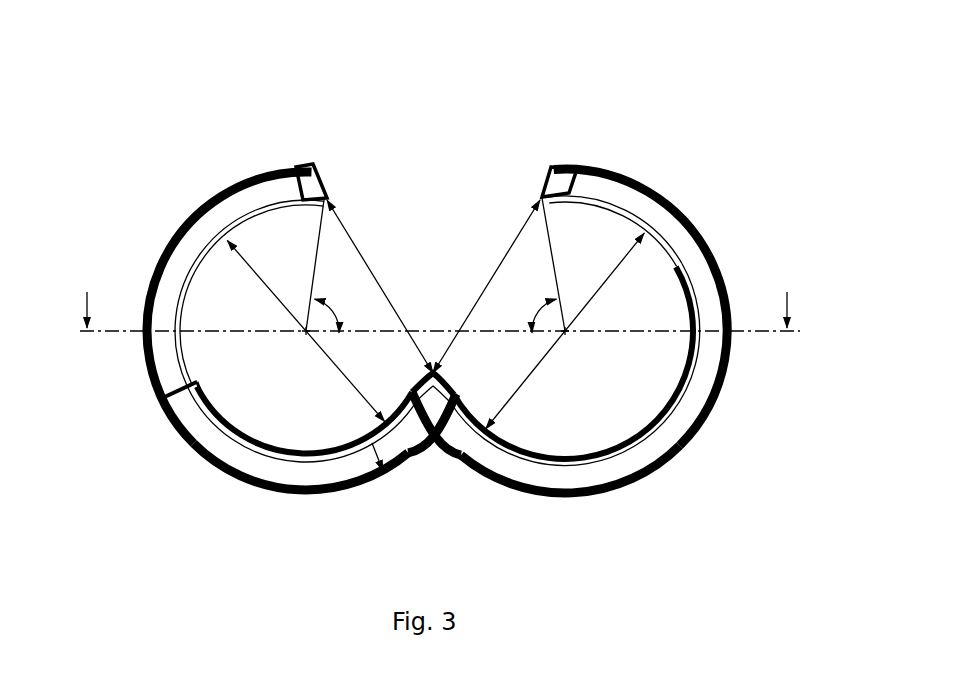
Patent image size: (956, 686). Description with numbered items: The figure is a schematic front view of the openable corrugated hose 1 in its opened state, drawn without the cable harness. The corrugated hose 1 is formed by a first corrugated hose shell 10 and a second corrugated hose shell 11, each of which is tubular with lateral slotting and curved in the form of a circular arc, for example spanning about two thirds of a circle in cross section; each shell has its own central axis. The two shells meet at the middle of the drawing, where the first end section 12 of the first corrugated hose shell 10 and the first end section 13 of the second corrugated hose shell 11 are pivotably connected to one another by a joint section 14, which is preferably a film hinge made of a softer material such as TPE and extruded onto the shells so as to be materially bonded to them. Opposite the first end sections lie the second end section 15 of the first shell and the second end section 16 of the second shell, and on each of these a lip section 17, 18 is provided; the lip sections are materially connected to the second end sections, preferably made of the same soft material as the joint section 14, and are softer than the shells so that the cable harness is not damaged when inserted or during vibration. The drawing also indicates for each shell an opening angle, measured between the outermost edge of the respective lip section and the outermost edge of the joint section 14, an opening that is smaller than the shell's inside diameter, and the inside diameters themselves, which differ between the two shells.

The corrugated hose 1 is at (441, 108).
The first corrugated hose shell 10 is at (152, 392).
The second corrugated hose shell 11 is at (708, 232).
The first end section 12 is at (405, 445).
The first end section 13 is at (460, 445).
The joint section 14 is at (433, 368).
The second end section 15 is at (243, 184).
The second end section 16 is at (640, 192).
The lip section 17 is at (323, 194).
The lip section 18 is at (543, 194).